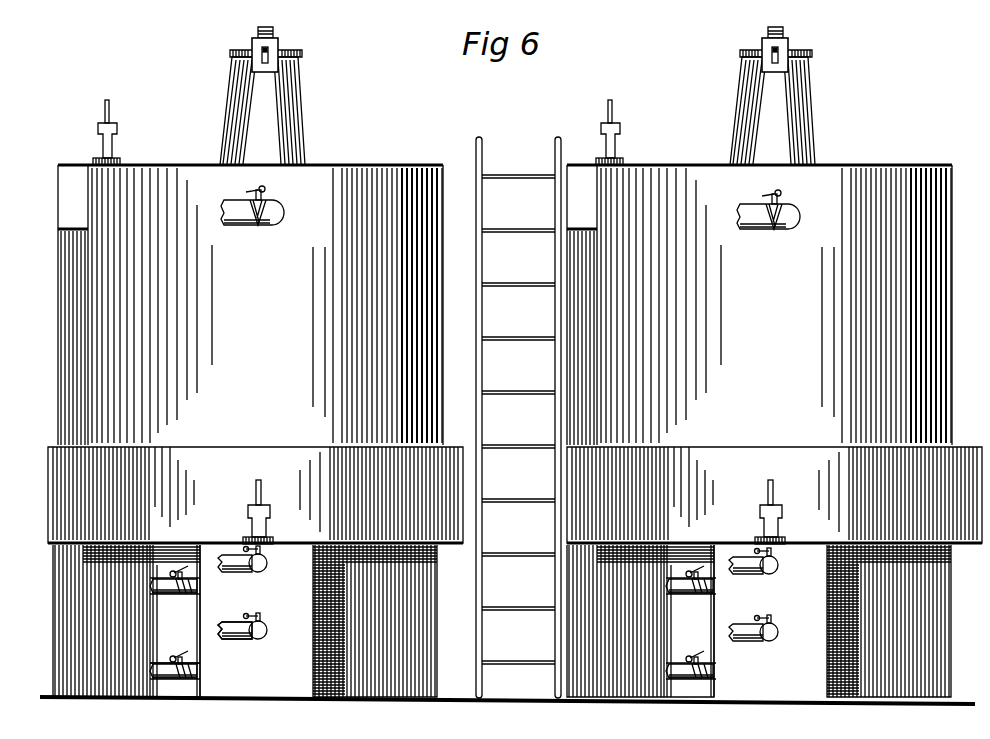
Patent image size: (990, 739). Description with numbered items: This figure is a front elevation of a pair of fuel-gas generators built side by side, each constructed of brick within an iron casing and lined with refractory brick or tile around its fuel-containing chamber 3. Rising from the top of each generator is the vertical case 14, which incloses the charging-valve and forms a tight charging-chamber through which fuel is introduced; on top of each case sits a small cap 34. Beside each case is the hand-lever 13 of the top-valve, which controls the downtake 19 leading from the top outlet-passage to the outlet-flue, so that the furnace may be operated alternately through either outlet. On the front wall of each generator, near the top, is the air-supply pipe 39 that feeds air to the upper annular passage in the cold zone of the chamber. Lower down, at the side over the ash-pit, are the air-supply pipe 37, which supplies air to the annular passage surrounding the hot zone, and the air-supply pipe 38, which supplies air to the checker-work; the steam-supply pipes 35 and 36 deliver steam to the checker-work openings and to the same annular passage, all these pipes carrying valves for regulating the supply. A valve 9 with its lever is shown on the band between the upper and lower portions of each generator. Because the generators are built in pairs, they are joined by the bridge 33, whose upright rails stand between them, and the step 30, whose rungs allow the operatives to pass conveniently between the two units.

The fuel-containing chamber 3 is at (515, 431).
The valve 9 is at (514, 504).
The hand-lever 13 is at (365, 132).
The vertical case 14 is at (517, 96).
The downtake 19 is at (327, 337).
The step 30 is at (518, 419).
The bridge 33 is at (505, 417).
The chimney cap box 34 is at (520, 55).
The steam-supply pipe 35 is at (520, 569).
The steam-supply pipe 36 is at (520, 637).
The air-supply pipe 37 is at (417, 574).
The air-supply pipe 38 is at (417, 661).
The air-supply pipe 39 is at (526, 215).